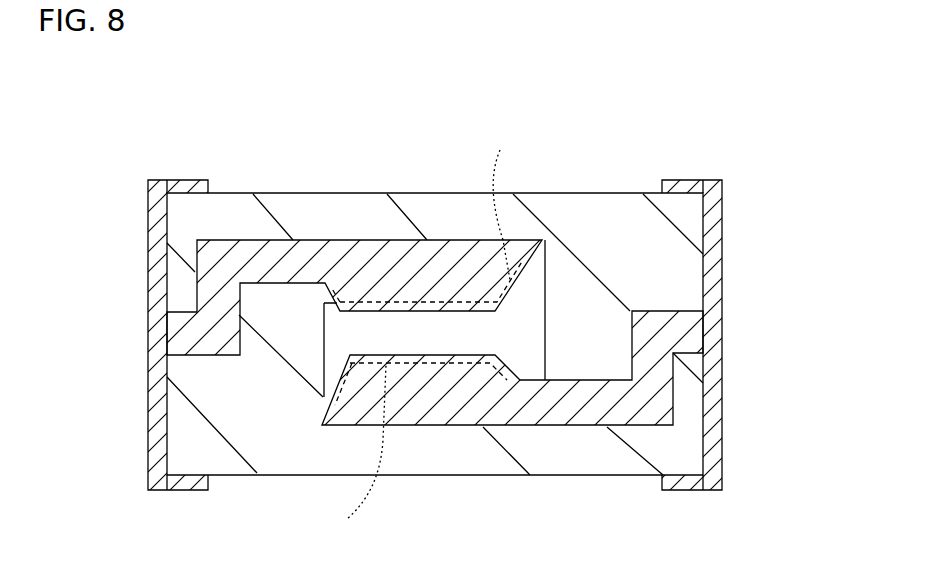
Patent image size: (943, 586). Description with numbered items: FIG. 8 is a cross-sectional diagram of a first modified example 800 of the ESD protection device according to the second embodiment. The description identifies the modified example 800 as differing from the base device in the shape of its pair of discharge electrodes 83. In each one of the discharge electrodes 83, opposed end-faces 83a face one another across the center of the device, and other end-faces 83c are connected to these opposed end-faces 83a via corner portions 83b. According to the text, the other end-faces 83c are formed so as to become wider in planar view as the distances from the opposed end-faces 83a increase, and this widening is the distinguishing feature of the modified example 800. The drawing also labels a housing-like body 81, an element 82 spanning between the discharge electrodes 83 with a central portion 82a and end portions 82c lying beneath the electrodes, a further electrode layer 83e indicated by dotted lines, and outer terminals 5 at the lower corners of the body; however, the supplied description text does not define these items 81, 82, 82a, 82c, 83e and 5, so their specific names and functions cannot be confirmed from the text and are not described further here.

The first modified example 800 is at (76, 87).
The housing / insulating substrate 81 is at (670, 208).
The fusible element 82 is at (530, 332).
The central portion of fusible element 82a is at (430, 333).
The end portion of fusible element 82c is at (523, 267).
The discharge electrodes 83 is at (182, 330).
The opposed end-faces 83a is at (450, 240).
The corner portions 83b is at (543, 240).
The other end-faces 83c is at (512, 290).
The electrode end layer 83e is at (432, 332).
The external terminal 5 is at (160, 433).